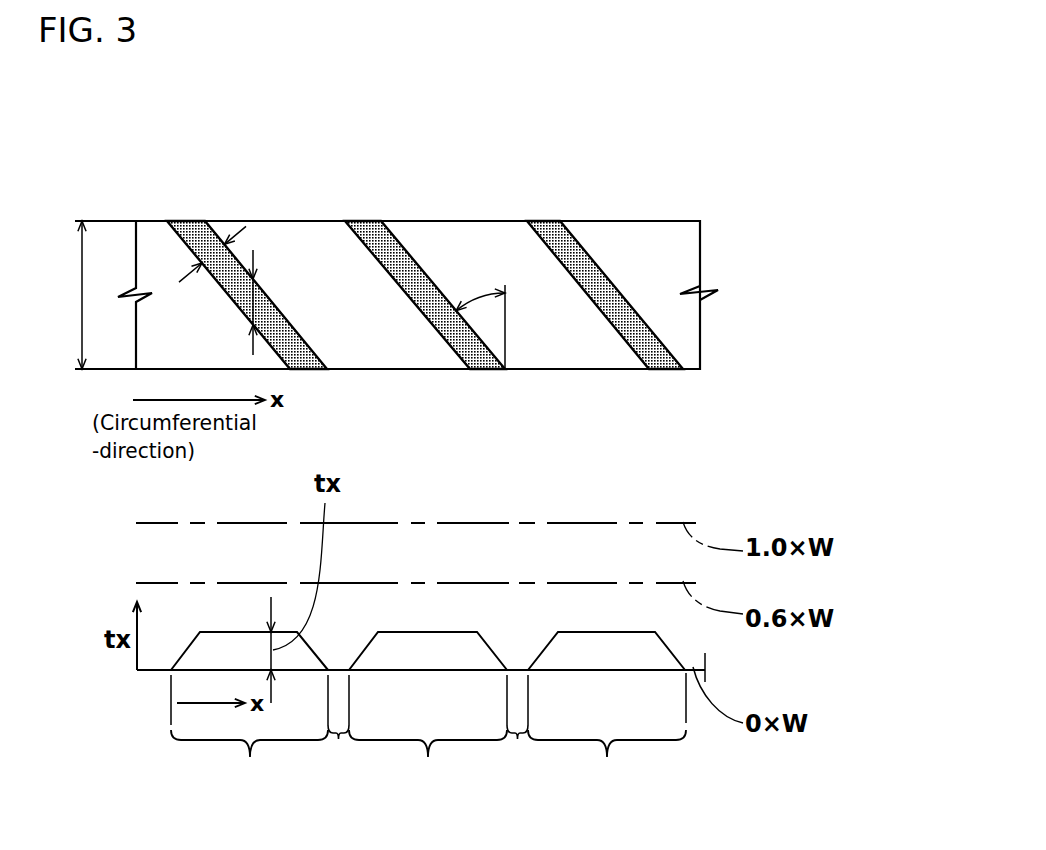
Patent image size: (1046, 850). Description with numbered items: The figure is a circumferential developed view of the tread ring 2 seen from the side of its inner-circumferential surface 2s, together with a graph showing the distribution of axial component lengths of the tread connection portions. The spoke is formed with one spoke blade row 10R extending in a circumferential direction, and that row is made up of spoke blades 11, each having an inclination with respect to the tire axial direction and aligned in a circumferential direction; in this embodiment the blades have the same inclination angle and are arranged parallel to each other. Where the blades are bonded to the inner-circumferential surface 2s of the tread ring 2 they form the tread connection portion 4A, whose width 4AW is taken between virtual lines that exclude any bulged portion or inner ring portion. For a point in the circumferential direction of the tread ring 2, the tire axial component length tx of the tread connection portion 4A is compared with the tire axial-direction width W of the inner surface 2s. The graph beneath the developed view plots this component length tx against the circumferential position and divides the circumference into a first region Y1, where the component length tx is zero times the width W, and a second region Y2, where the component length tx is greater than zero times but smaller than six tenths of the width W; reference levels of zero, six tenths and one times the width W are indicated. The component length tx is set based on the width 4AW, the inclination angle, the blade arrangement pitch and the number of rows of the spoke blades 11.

The tread ring 2 is at (671, 219).
The inner-circumferential surface 2s is at (627, 237).
The tread connection portion 4A is at (398, 240).
The width of tread connection portion 4AW is at (200, 262).
The spoke blade 11 is at (415, 261).
The spoke blade row 10R is at (667, 261).
The tire axial component length tx is at (258, 302).
The tire axial-direction width W is at (65, 295).
The first region Y1 is at (430, 748).
The second region Y2 is at (428, 733).